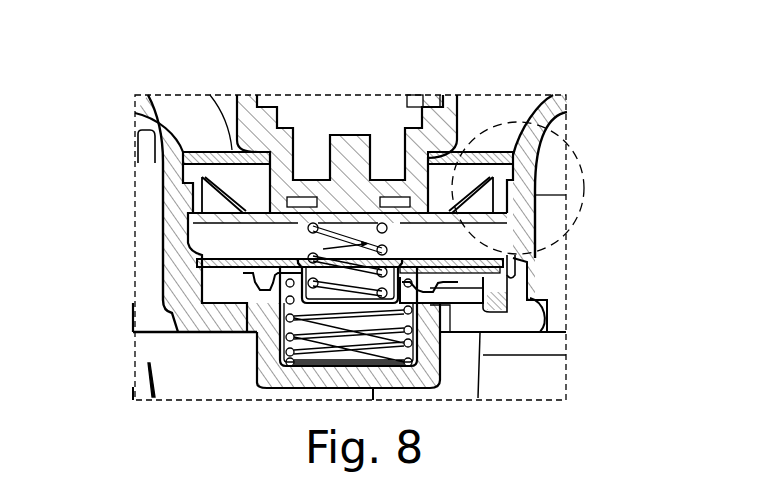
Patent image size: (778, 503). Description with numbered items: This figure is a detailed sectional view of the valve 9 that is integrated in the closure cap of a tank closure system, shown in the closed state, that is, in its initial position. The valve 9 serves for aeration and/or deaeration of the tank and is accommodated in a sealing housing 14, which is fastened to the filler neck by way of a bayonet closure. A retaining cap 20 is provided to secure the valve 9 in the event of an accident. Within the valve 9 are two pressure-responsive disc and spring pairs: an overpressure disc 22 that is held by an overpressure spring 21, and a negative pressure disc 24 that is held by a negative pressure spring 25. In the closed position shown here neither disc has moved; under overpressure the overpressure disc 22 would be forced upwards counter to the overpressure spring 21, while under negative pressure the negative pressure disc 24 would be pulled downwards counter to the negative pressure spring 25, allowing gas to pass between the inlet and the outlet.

The valve 9 is at (120, 287).
The sealing housing 14 is at (182, 192).
The retaining cap 20 is at (511, 124).
The overpressure spring 21 is at (462, 218).
The overpressure disc 22 is at (487, 276).
The negative pressure disc 24 is at (441, 285).
The negative pressure spring 25 is at (370, 343).